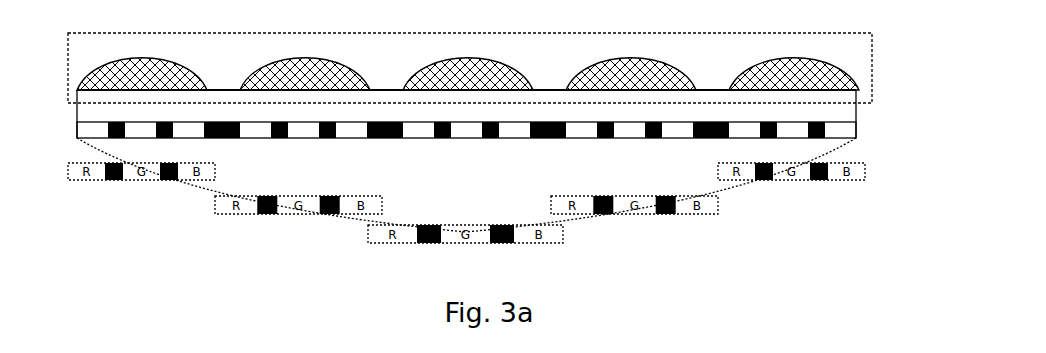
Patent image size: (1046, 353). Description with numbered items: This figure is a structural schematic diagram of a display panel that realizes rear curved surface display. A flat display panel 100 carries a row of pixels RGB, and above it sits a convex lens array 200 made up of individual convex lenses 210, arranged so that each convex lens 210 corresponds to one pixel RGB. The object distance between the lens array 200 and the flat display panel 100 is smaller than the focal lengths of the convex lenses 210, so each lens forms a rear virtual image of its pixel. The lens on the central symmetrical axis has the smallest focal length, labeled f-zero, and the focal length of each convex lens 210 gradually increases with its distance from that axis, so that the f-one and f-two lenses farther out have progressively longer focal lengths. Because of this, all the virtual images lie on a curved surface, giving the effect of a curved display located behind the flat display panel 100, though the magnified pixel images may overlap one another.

The flat display panel 100 is at (856, 130).
The convex lens array 200 is at (496, 57).
The convex lens 210 is at (502, 63).